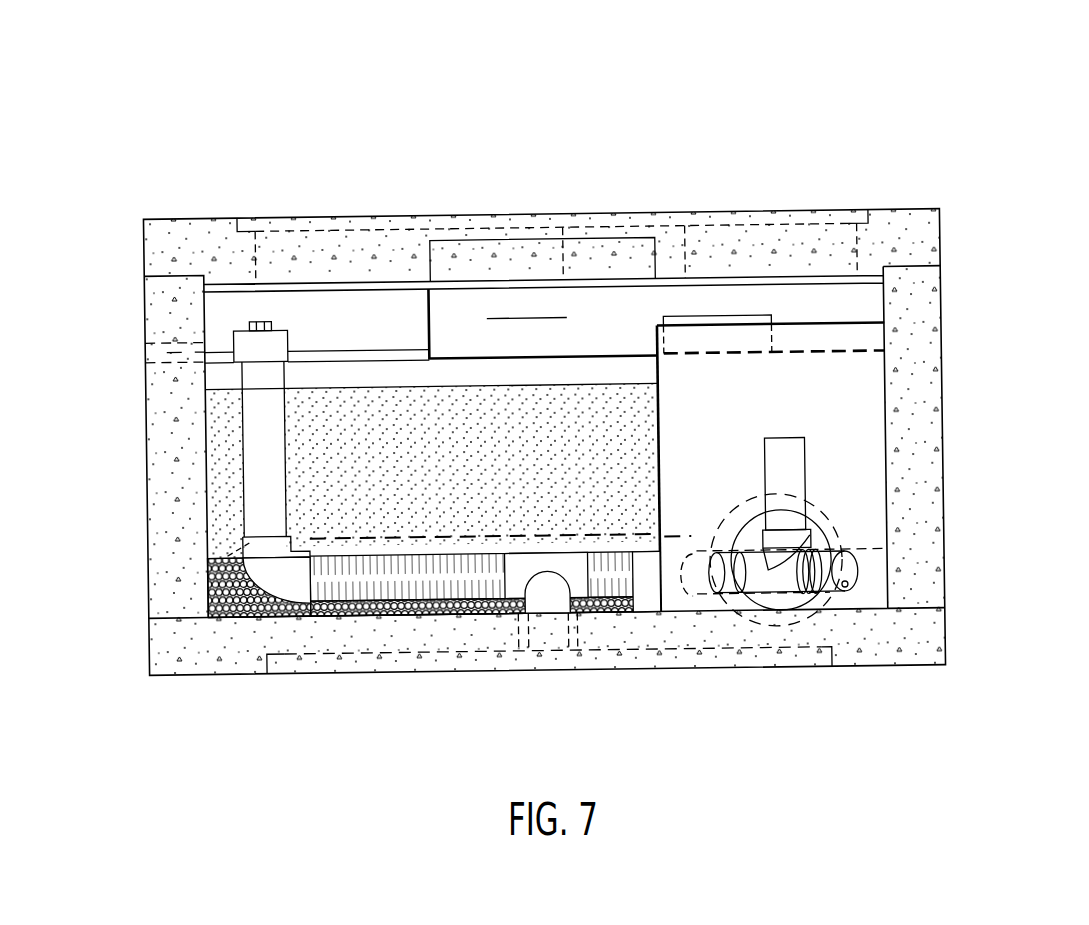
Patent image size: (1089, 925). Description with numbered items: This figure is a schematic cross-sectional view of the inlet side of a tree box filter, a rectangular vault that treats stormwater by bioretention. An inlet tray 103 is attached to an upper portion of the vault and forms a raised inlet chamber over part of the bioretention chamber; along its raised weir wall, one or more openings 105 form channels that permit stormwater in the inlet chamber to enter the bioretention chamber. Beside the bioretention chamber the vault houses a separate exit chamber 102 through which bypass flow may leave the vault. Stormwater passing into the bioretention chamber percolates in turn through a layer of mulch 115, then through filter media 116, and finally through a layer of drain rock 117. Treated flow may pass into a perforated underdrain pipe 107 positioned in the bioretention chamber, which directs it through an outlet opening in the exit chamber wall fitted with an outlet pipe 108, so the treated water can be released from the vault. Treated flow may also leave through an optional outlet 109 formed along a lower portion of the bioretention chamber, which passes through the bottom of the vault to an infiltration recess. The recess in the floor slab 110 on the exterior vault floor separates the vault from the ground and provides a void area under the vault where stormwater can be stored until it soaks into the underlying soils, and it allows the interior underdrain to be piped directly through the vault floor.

The exit chamber 102 is at (828, 325).
The inlet tray 103 is at (597, 285).
The openings 105 is at (530, 318).
The perforated underdrain pipe 107 is at (337, 590).
The outlet pipe 108 is at (810, 535).
The outlet 109 is at (587, 608).
The floor slab 110 is at (727, 648).
The layer of mulch 115 is at (362, 372).
The filter media 116 is at (318, 440).
The layer of drain rock 117 is at (407, 612).